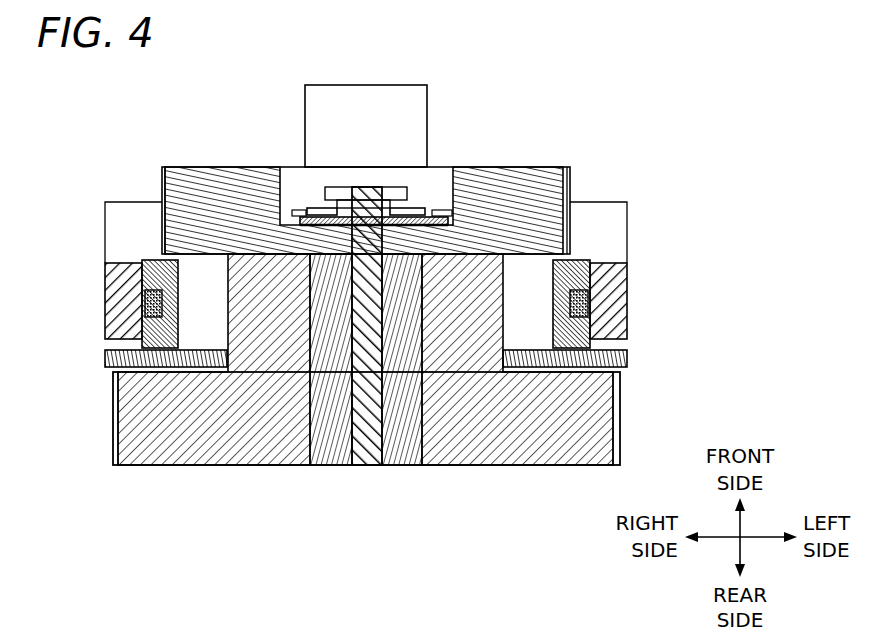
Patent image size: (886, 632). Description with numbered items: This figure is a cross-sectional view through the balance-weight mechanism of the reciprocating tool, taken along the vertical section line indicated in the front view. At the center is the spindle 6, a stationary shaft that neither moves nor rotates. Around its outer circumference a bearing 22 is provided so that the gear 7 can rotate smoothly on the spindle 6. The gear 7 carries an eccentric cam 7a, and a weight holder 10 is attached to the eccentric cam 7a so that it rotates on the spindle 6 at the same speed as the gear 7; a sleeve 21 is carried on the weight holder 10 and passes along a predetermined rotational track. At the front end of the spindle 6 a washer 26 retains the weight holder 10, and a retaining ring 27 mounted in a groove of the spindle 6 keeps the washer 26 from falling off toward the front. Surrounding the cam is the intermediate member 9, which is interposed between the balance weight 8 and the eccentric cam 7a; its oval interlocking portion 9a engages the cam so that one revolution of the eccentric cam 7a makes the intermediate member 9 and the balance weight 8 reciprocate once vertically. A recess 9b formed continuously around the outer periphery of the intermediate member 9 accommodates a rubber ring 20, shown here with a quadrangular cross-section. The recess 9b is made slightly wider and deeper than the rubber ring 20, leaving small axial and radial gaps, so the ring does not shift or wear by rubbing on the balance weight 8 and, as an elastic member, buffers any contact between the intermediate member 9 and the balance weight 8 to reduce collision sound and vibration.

The spindle 6 is at (357, 188).
The gear 7 is at (104, 427).
The eccentric cam 7a is at (263, 252).
The balance weight 8 is at (127, 292).
The intermediate member 9 is at (592, 249).
The interlocking portion 9a is at (547, 322).
The recess 9b is at (625, 328).
The weight holder 10 is at (488, 183).
The rubber ring 20 is at (632, 292).
The sleeve 21 is at (382, 103).
The bearing 22 is at (405, 430).
The washer 26 is at (303, 217).
The retaining ring 27 is at (420, 206).